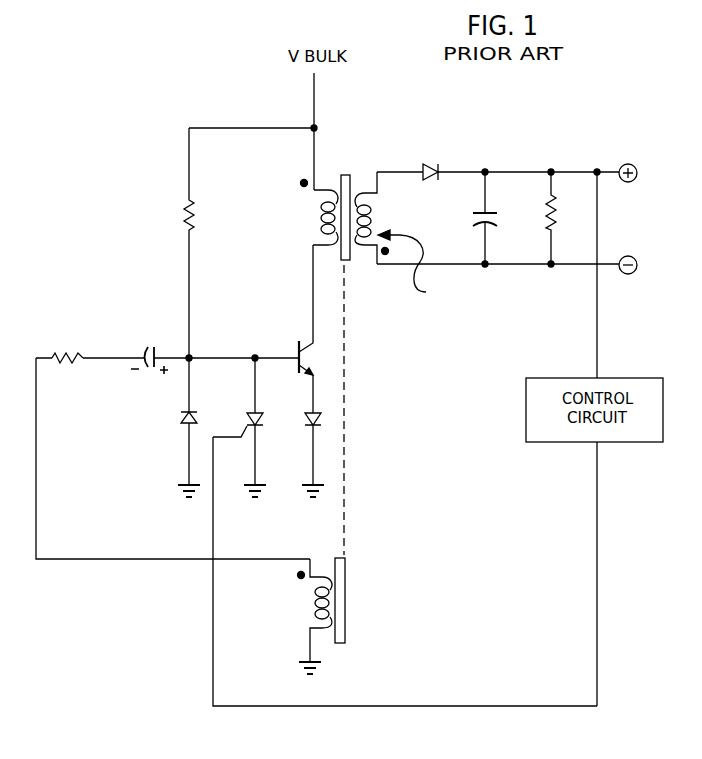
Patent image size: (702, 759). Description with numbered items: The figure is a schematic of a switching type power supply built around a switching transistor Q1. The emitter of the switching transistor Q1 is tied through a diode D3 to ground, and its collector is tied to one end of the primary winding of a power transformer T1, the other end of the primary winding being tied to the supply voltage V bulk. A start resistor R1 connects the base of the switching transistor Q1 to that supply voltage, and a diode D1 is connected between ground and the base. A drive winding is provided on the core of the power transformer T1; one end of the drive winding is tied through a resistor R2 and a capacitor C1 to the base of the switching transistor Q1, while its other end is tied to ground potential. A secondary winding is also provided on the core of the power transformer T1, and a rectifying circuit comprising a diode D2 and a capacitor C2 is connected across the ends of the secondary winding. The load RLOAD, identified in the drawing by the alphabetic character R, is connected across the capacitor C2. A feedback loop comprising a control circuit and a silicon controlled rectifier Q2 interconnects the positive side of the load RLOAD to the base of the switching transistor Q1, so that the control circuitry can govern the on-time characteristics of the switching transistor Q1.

The start resistor R1 is at (177, 243).
The resistor R2 is at (67, 343).
The capacitor C1 is at (149, 346).
The capacitor C2 is at (472, 218).
The diode D1 is at (177, 421).
The diode D2 is at (410, 163).
The diode D3 is at (323, 438).
The switching transistor Q1 is at (291, 329).
The silicon controlled rectifier Q2 is at (251, 421).
The power transformer T1 is at (371, 406).
The load RLOAD is at (569, 218).